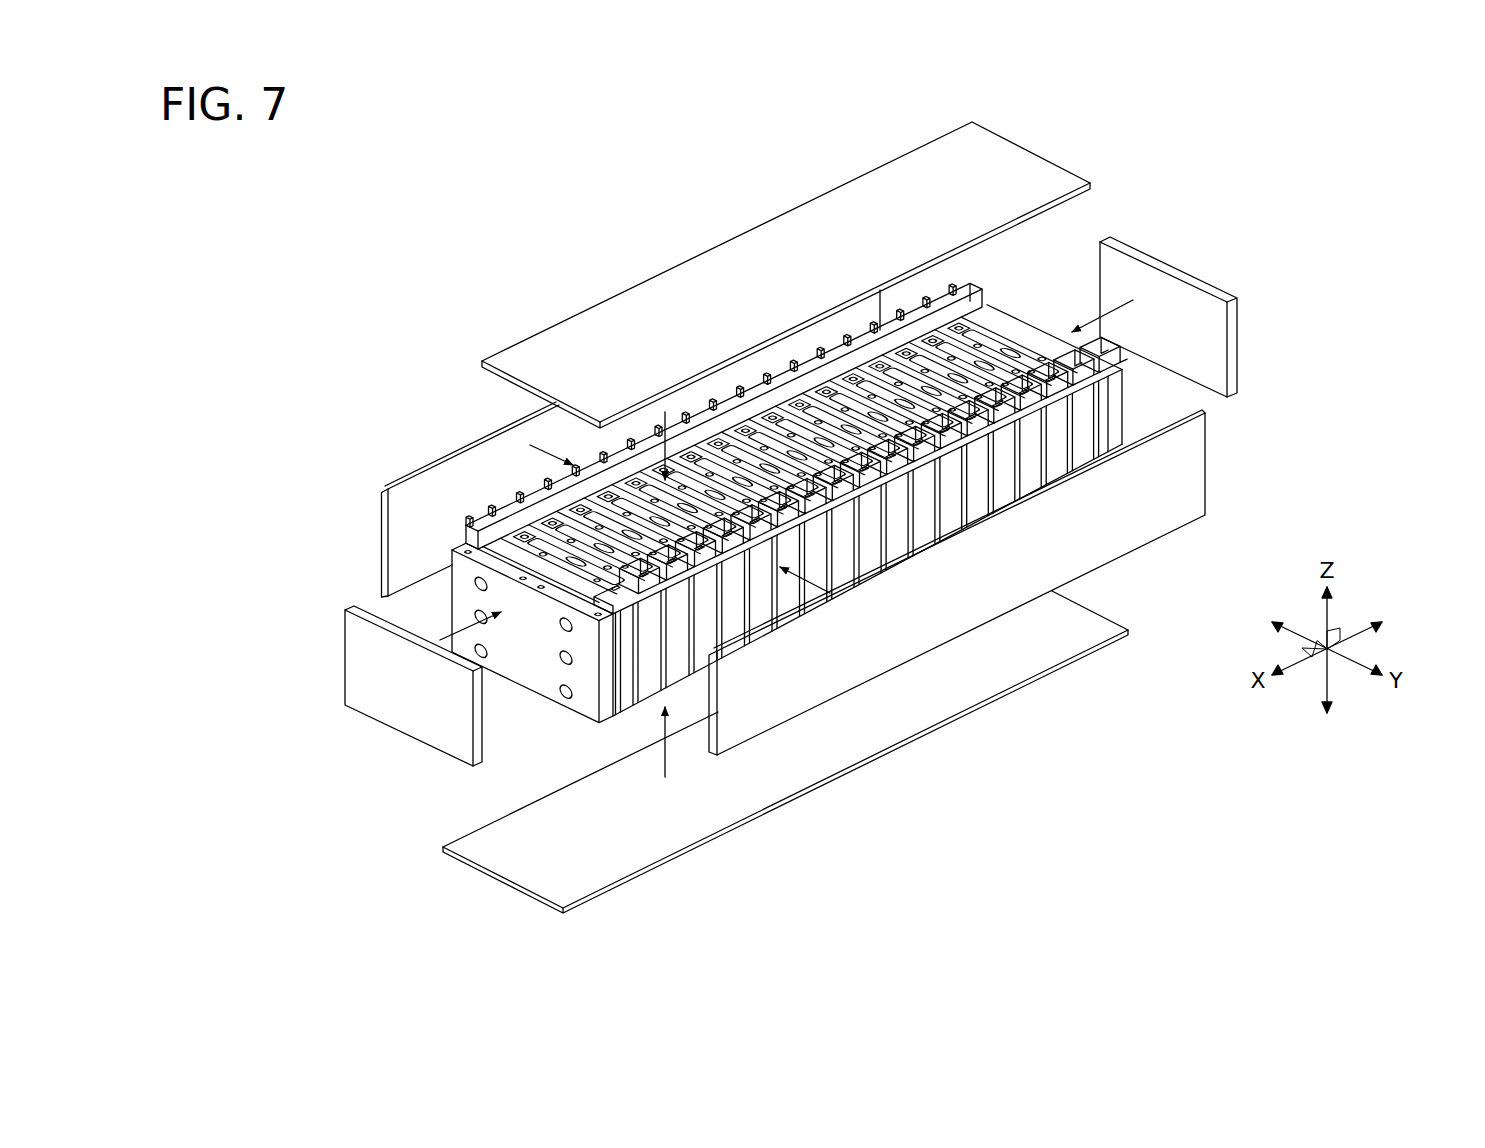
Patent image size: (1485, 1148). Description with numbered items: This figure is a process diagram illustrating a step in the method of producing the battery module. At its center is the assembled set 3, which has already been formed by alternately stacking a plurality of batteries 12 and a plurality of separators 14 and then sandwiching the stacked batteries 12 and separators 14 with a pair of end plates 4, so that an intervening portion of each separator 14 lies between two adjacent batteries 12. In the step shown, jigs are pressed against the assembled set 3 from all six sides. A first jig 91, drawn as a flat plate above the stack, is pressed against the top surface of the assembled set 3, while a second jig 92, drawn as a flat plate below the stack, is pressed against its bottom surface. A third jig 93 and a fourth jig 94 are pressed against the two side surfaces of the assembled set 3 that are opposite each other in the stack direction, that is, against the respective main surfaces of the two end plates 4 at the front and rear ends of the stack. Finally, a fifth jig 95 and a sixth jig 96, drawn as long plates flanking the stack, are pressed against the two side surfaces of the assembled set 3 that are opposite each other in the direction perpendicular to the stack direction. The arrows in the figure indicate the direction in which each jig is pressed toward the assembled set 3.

The assembled set 3 is at (806, 512).
The end plate 4 is at (525, 673).
The battery 12 is at (1013, 337).
The separator 14 is at (967, 293).
The first jig 91 is at (1036, 153).
The second jig 92 is at (887, 760).
The third jig 93 is at (405, 722).
The fourth jig 94 is at (1240, 385).
The fifth jig 95 is at (1178, 534).
The sixth jig 96 is at (405, 478).